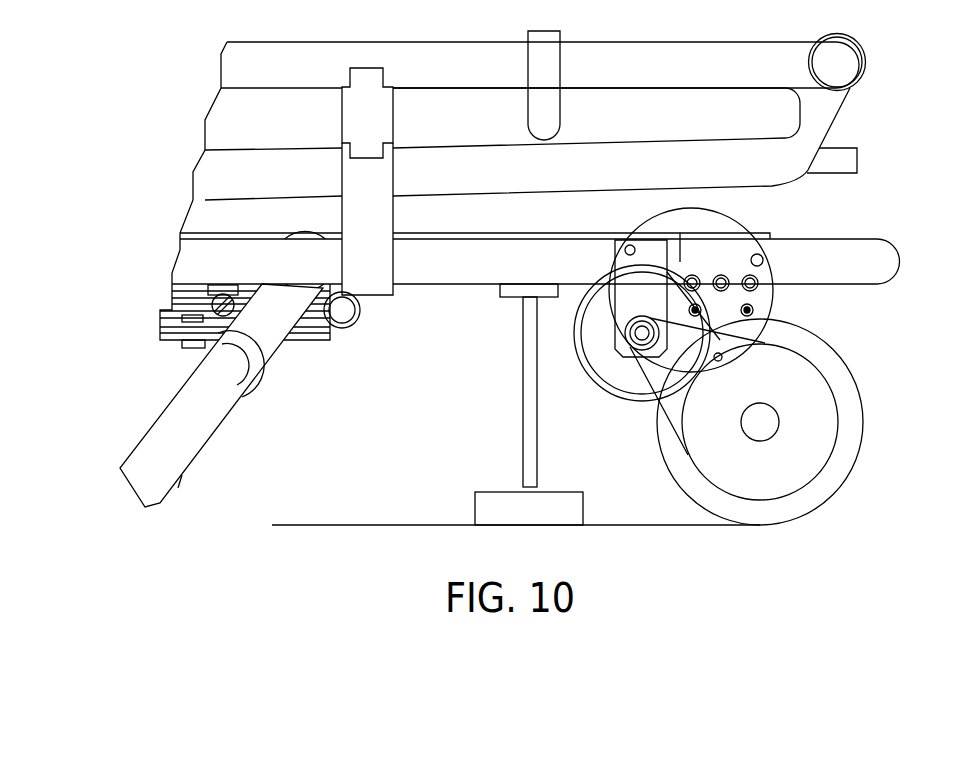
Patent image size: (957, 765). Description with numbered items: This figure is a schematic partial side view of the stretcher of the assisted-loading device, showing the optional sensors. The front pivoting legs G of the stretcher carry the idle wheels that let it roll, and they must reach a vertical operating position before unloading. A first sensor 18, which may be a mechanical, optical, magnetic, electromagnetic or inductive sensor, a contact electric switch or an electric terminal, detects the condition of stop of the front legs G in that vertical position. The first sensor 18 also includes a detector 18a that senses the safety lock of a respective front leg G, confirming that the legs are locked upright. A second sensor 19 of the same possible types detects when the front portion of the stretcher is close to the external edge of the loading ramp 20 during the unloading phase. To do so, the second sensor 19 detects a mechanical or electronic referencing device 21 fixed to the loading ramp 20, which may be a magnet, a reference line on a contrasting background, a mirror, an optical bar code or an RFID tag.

The pivoting legs G is at (152, 438).
The detector 18a is at (226, 292).
The first sensor 18 is at (342, 333).
The second sensor 19 is at (527, 343).
The loading ramp 20 is at (370, 517).
The referencing device 21 is at (493, 490).